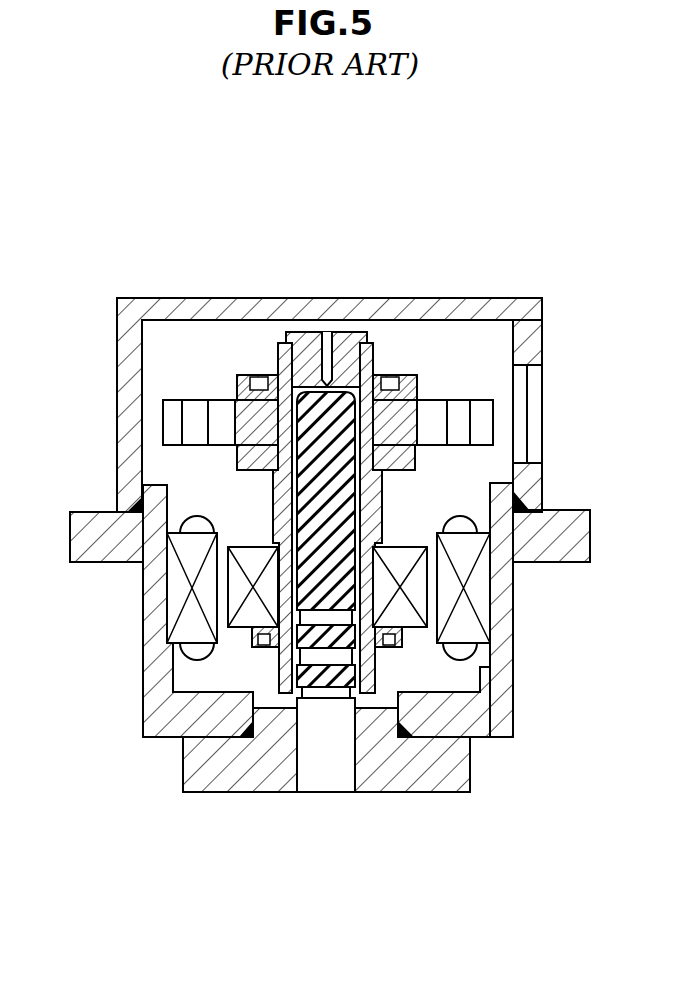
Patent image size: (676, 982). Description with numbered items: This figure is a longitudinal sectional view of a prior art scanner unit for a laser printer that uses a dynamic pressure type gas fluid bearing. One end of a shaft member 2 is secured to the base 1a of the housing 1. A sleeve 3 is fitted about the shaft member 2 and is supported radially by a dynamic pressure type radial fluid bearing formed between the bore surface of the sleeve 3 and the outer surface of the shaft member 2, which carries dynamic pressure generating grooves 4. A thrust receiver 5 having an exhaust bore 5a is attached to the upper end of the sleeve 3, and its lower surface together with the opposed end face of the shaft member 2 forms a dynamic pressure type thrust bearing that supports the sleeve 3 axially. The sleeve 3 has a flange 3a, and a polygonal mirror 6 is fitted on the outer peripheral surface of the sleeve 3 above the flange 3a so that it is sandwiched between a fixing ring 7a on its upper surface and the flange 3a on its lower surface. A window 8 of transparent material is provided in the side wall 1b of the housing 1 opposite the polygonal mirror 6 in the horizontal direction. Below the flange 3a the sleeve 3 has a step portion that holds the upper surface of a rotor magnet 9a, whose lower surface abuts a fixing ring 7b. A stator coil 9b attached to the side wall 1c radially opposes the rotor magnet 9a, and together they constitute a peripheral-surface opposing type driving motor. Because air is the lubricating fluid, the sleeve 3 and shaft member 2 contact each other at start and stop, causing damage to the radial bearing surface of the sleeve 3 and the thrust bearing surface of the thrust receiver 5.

The housing 1 is at (113, 347).
The base 1a is at (237, 767).
The side wall 1b is at (525, 343).
The side wall 1c is at (503, 626).
The shaft member 2 is at (327, 758).
The sleeve 3 is at (281, 356).
The flange 3a is at (247, 472).
The dynamic pressure generating grooves 4 is at (340, 526).
The thrust receiver 5 is at (299, 346).
The exhaust bore 5a is at (328, 340).
The polygonal mirror 6 is at (168, 427).
The fixing ring 7a is at (240, 390).
The fixing ring 7b is at (254, 644).
The window 8 is at (520, 420).
The rotor magnet 9a is at (237, 588).
The stator coil 9b is at (193, 627).